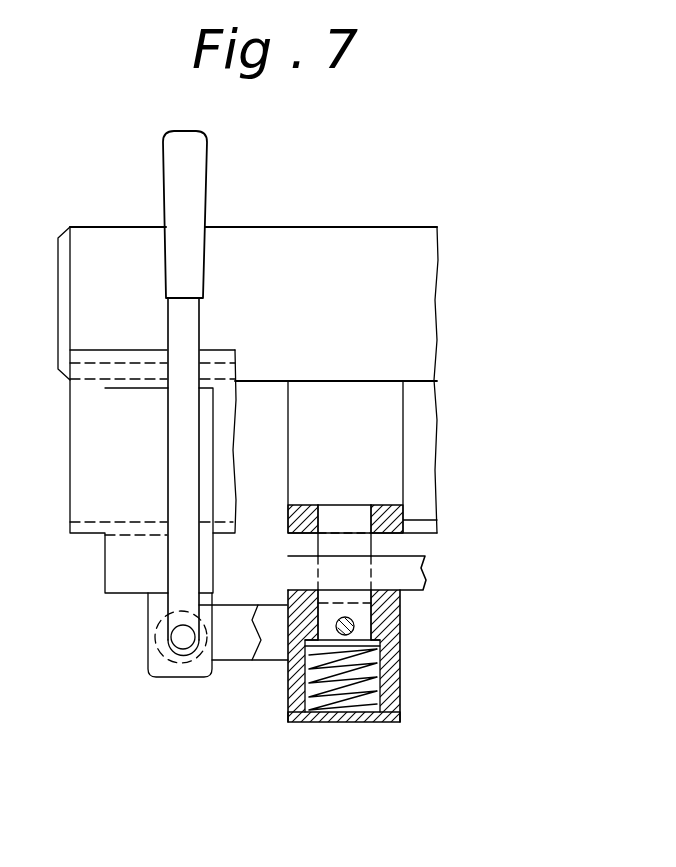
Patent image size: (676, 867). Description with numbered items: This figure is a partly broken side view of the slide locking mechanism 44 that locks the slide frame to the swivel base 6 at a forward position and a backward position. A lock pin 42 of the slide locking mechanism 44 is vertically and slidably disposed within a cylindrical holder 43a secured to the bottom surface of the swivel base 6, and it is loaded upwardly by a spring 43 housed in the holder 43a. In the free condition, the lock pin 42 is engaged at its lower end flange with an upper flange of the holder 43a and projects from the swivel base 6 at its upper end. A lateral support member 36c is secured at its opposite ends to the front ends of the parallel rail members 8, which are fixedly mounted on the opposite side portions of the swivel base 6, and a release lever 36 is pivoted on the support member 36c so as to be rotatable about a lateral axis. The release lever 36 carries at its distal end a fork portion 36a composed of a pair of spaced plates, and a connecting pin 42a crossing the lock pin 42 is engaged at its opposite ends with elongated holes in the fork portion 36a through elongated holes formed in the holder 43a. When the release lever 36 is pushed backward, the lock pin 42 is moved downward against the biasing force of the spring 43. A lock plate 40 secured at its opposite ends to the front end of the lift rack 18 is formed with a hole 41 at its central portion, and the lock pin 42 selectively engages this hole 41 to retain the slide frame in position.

The swivel base 6 is at (412, 581).
The parallel rail members 8 is at (78, 454).
The lift rack 18 is at (347, 246).
The release lever 36 is at (186, 328).
The fork portion 36a is at (235, 623).
The lateral support member 36c is at (121, 575).
The lock plate 40 is at (303, 505).
The hole 41 is at (360, 514).
The lock pin 42 is at (347, 516).
The connecting pin 42a is at (345, 616).
The spring 43 is at (362, 678).
The cylindrical holder 43a is at (395, 664).
The slide locking mechanism 44 is at (279, 689).